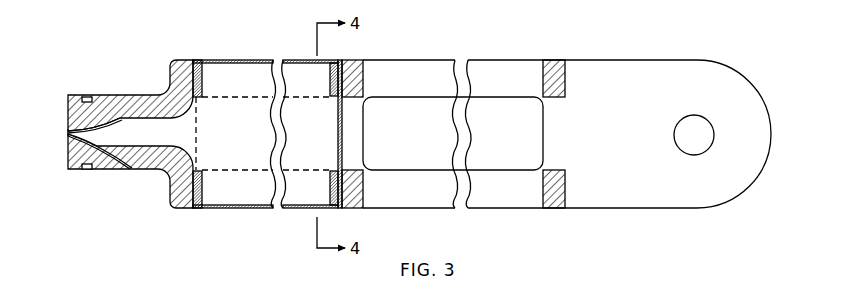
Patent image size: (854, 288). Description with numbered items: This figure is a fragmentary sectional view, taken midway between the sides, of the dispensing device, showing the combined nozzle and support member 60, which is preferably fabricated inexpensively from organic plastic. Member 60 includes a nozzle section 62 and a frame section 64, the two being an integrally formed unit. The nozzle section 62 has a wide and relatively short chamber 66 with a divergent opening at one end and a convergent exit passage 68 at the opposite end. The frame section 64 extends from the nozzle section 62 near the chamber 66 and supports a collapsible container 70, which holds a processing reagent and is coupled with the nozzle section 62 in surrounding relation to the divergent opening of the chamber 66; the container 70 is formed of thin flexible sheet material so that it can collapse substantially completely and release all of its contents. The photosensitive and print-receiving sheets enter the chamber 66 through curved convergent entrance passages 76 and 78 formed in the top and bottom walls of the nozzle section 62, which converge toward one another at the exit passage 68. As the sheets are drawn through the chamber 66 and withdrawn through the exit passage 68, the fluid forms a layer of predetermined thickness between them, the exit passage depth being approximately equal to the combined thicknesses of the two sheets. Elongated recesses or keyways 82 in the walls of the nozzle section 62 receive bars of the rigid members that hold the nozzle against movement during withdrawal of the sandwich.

The combined nozzle and support member 60 is at (364, 57).
The nozzle section 62 is at (142, 95).
The frame section 64 is at (408, 210).
The chamber 66 is at (155, 135).
The exit passage 68 is at (67, 131).
The collapsible container 70 is at (225, 60).
The entrance passage 76 is at (132, 96).
The entrance passage 78 is at (132, 169).
The keyways 82 is at (87, 97).